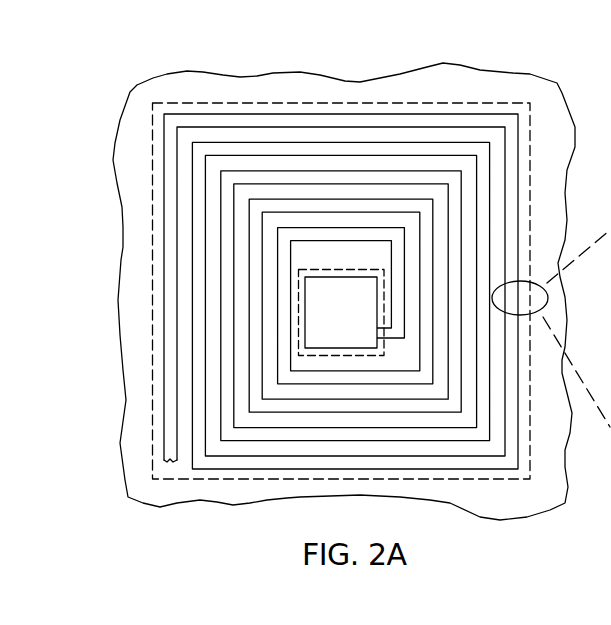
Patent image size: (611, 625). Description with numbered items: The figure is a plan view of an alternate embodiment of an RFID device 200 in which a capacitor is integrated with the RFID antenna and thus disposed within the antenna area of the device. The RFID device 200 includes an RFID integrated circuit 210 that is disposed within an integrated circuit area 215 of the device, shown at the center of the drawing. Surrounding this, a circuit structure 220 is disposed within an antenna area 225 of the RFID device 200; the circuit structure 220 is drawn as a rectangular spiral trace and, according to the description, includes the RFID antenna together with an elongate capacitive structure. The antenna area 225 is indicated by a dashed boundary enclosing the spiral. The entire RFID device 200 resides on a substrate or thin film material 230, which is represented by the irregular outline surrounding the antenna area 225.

The RFID device 200 is at (159, 40).
The RFID integrated circuit 210 is at (359, 320).
The integrated circuit area 215 is at (318, 269).
The circuit structure 220 is at (218, 465).
The antenna area 225 is at (381, 102).
The substrate or thin film material 230 is at (143, 477).